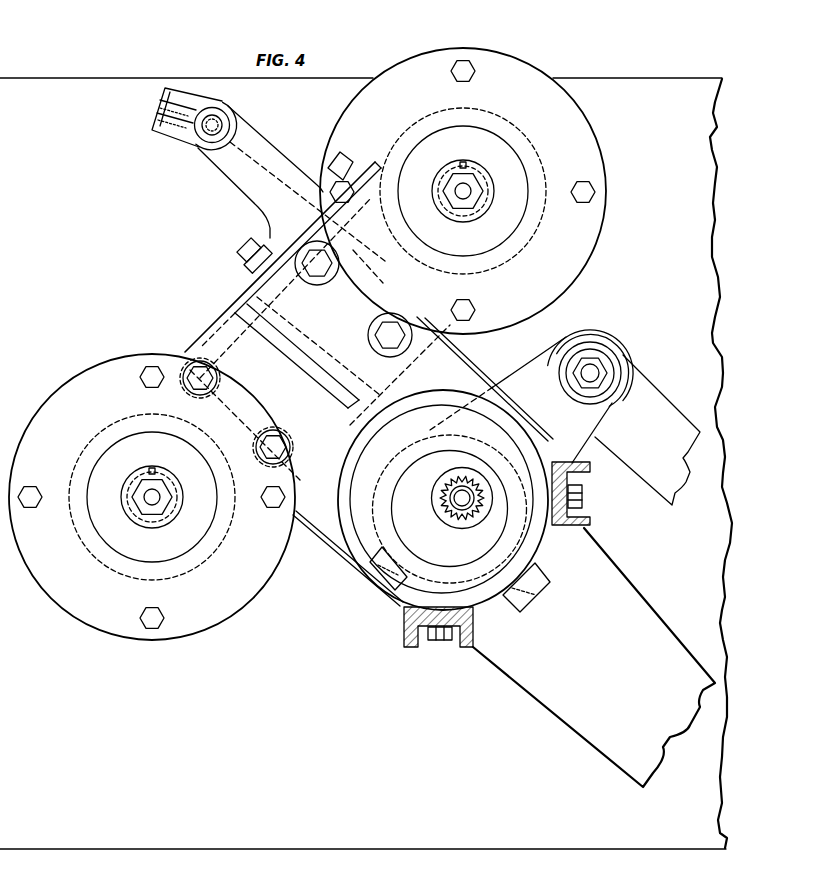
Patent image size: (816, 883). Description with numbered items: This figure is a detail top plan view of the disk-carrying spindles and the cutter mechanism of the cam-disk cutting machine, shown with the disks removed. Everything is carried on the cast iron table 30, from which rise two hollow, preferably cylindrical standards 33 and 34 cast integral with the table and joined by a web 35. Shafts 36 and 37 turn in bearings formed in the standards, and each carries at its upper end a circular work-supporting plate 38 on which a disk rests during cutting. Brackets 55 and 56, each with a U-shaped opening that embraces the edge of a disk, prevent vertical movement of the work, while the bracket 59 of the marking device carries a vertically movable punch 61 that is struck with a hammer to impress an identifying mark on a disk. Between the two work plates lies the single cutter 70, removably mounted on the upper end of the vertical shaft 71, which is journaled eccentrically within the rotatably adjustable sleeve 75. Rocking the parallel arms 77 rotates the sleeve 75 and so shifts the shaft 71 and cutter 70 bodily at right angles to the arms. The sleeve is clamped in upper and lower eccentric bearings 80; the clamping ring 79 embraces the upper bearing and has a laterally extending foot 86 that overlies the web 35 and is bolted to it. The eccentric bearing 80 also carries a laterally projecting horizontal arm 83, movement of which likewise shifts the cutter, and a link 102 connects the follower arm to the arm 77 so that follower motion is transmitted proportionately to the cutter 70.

The cast iron table 30 is at (338, 849).
The hollow standard 33 is at (544, 166).
The hollow standard 34 is at (180, 574).
The web 35 is at (385, 162).
The shaft 36 is at (463, 191).
The shaft 37 is at (152, 497).
The work-supporting plate 38 is at (600, 225).
The bracket 55 is at (590, 522).
The bracket 56 is at (465, 645).
The bracket 59 is at (260, 204).
The punch 61 is at (225, 116).
The cutter 70 is at (448, 512).
The vertical shaft 71 is at (464, 504).
The sleeve 75 is at (400, 516).
The arm 77 is at (530, 367).
The clamping ring 79 is at (435, 388).
The eccentric bearing 80 is at (417, 412).
The horizontal arm 83 is at (622, 592).
The foot 86 is at (240, 306).
The link 102 is at (655, 392).